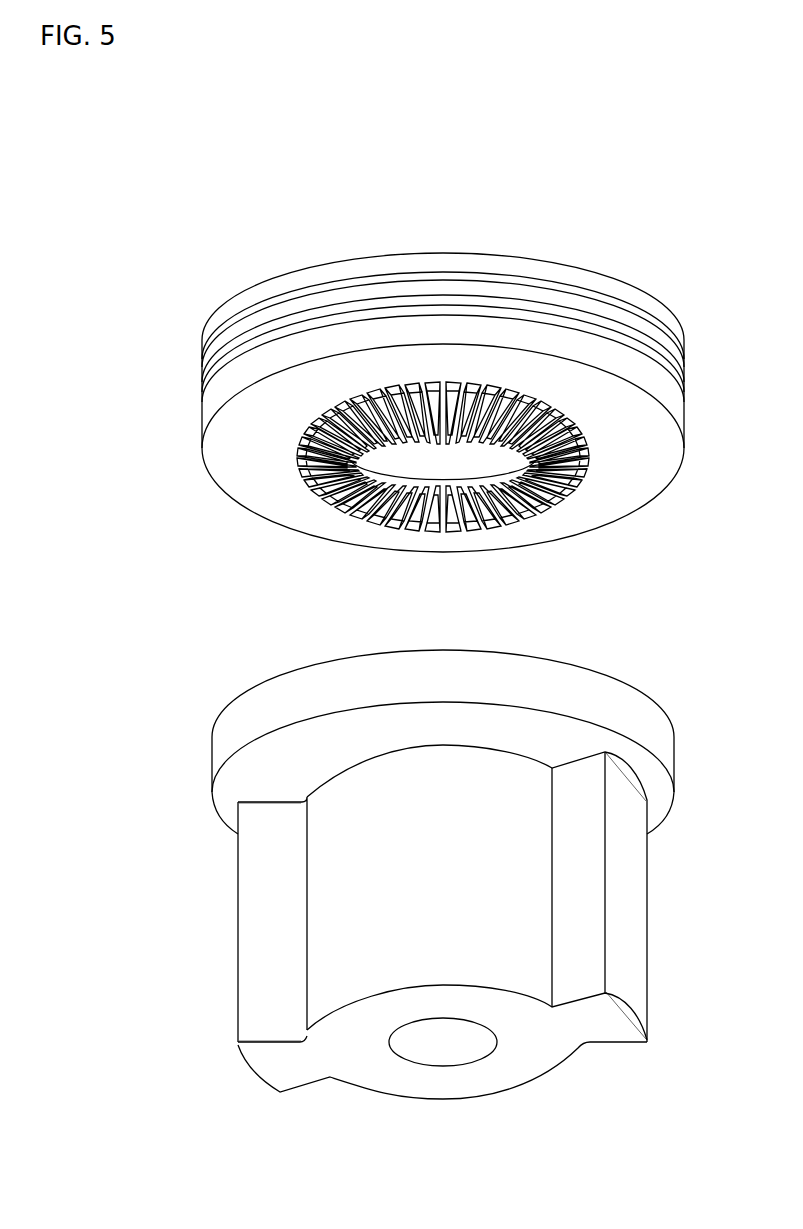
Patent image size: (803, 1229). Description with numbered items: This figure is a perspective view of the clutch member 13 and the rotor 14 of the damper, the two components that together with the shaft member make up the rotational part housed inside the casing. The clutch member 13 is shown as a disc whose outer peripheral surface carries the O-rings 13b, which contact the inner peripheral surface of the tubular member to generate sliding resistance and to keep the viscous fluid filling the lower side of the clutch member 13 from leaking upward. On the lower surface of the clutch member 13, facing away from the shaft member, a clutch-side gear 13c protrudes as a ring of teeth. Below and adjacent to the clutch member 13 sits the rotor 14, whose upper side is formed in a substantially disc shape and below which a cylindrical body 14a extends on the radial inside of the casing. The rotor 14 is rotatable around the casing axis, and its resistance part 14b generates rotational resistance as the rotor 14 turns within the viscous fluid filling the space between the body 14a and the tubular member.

The clutch member 13 is at (399, 423).
The O-rings 13b is at (205, 396).
The clutch-side gear 13c is at (384, 527).
The rotor 14 is at (439, 874).
The body 14a is at (330, 948).
The resistance part 14b is at (255, 912).